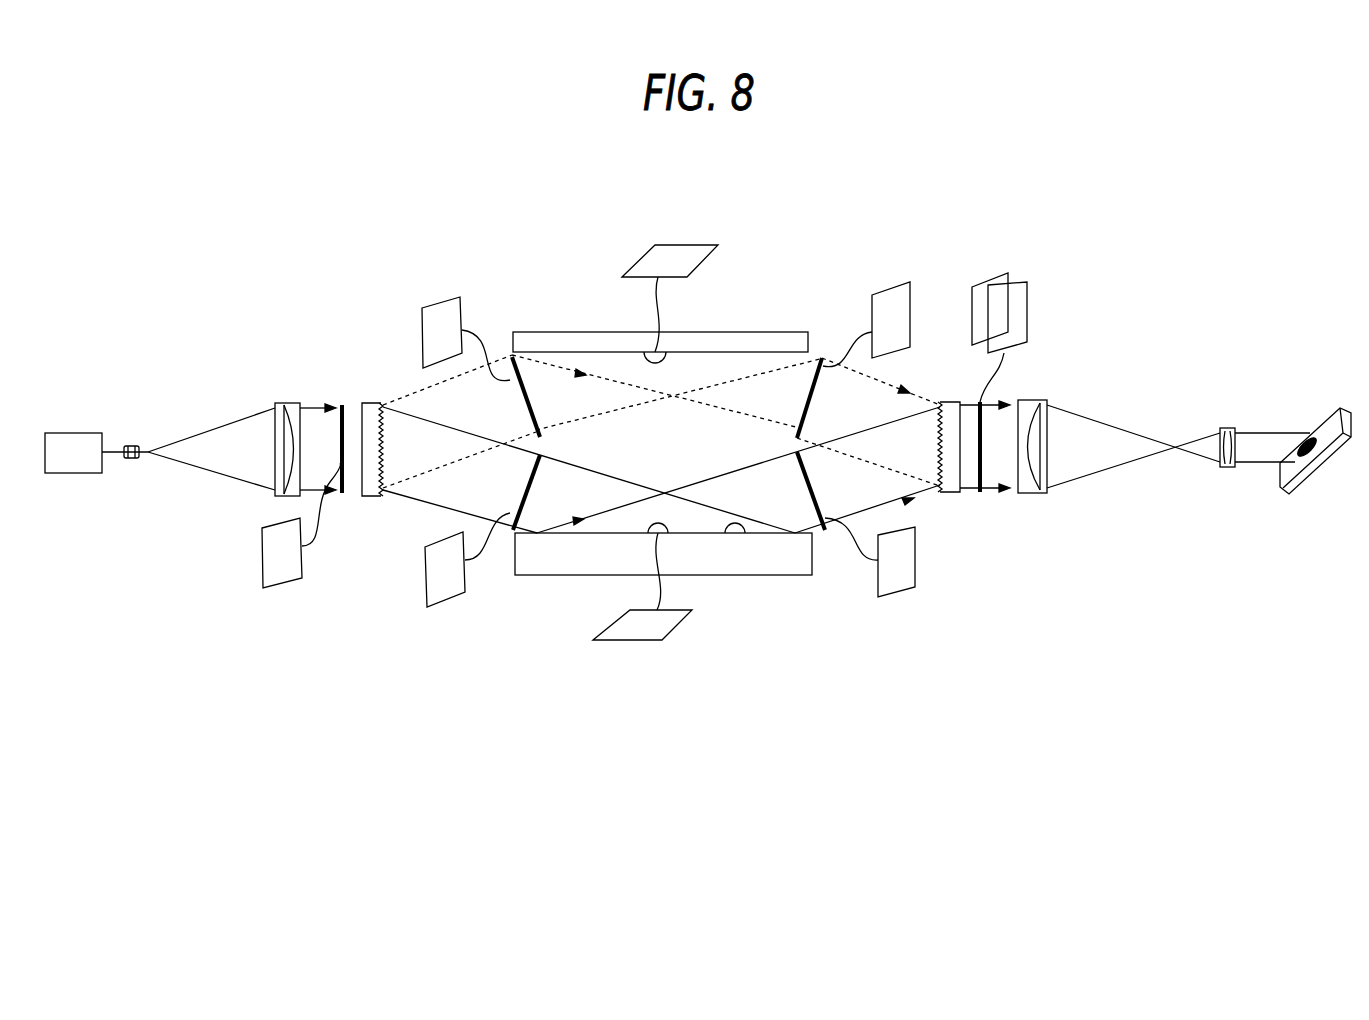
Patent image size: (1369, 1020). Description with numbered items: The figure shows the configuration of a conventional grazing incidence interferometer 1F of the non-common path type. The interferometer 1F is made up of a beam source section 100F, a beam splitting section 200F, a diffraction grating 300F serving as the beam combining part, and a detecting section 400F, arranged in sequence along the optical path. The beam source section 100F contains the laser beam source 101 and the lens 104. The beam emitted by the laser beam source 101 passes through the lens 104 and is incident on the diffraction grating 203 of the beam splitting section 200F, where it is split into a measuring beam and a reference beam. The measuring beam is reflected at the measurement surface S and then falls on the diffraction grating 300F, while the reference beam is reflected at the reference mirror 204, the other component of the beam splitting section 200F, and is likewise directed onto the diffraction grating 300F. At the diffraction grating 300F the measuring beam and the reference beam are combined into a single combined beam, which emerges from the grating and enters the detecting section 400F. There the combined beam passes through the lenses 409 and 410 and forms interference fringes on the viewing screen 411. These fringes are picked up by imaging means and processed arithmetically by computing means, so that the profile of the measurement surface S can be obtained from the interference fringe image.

The laser beam source 101 is at (70, 433).
The beam source section 100F is at (172, 387).
The lens 104 is at (283, 403).
The diffraction grating 203 is at (371, 403).
The beam splitting section 200F is at (497, 292).
The reference mirror 204 is at (568, 332).
The grazing incidence interferometer 1F is at (765, 267).
The measurement surface S is at (735, 533).
The diffraction grating 300F is at (950, 402).
The lens 409 is at (1033, 400).
The detecting section 400F is at (1138, 349).
The lens 410 is at (1225, 428).
The viewing screen 411 is at (1322, 412).